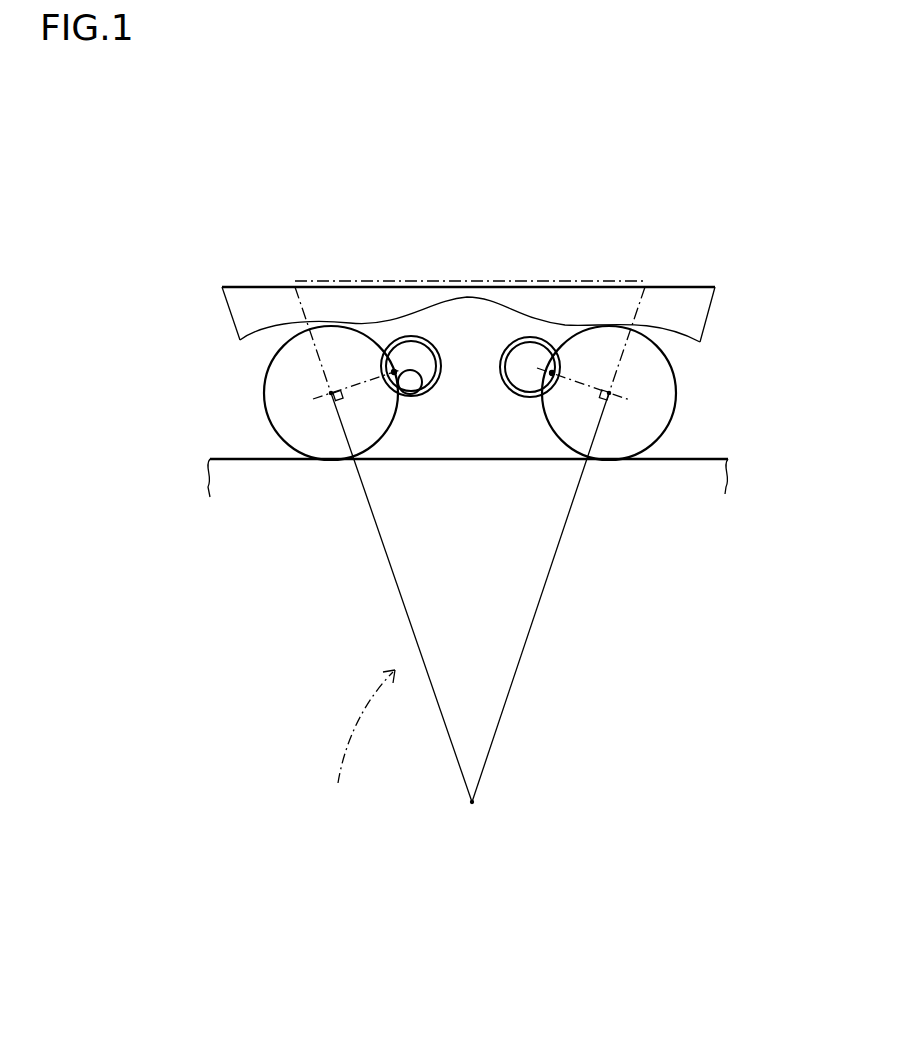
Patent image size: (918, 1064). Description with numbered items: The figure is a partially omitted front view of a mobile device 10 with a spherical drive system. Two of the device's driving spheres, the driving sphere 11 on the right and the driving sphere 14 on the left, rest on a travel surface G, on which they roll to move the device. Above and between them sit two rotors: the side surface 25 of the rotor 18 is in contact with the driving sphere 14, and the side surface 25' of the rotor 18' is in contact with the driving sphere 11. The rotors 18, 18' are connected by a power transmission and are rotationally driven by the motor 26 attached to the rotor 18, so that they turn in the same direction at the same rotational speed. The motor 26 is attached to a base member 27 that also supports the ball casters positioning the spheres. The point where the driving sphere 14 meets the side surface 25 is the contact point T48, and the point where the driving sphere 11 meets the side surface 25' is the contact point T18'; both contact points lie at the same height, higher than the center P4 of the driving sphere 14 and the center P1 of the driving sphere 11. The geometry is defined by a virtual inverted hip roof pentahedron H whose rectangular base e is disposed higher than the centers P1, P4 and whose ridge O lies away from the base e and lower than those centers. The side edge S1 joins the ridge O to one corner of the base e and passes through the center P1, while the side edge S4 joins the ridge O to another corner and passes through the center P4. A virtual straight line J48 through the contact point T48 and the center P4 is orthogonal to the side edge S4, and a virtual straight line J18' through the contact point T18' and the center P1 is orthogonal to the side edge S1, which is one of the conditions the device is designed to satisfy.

The mobile device with a spherical drive system 10 is at (700, 137).
The driving sphere 11 is at (653, 405).
The driving sphere 14 is at (288, 405).
The rotor 18 is at (411, 294).
The rotor 18' is at (531, 287).
The side surface 25 is at (388, 298).
The side surface 25' is at (556, 291).
The motor 26 is at (420, 373).
The base member 27 is at (675, 302).
The base e is at (615, 279).
The travel surface G is at (717, 458).
The center of the driving sphere 11 P1 is at (612, 391).
The center of the driving sphere 14 P4 is at (328, 391).
The virtual straight line J48 is at (358, 385).
The virtual straight line J18' is at (598, 457).
The contact point T48 is at (390, 378).
The contact point T18' is at (588, 495).
The side edge S4 is at (433, 717).
The side edge S1 is at (493, 740).
The ridge O is at (472, 802).
The virtual inverted hip roof pentahedron H is at (361, 747).